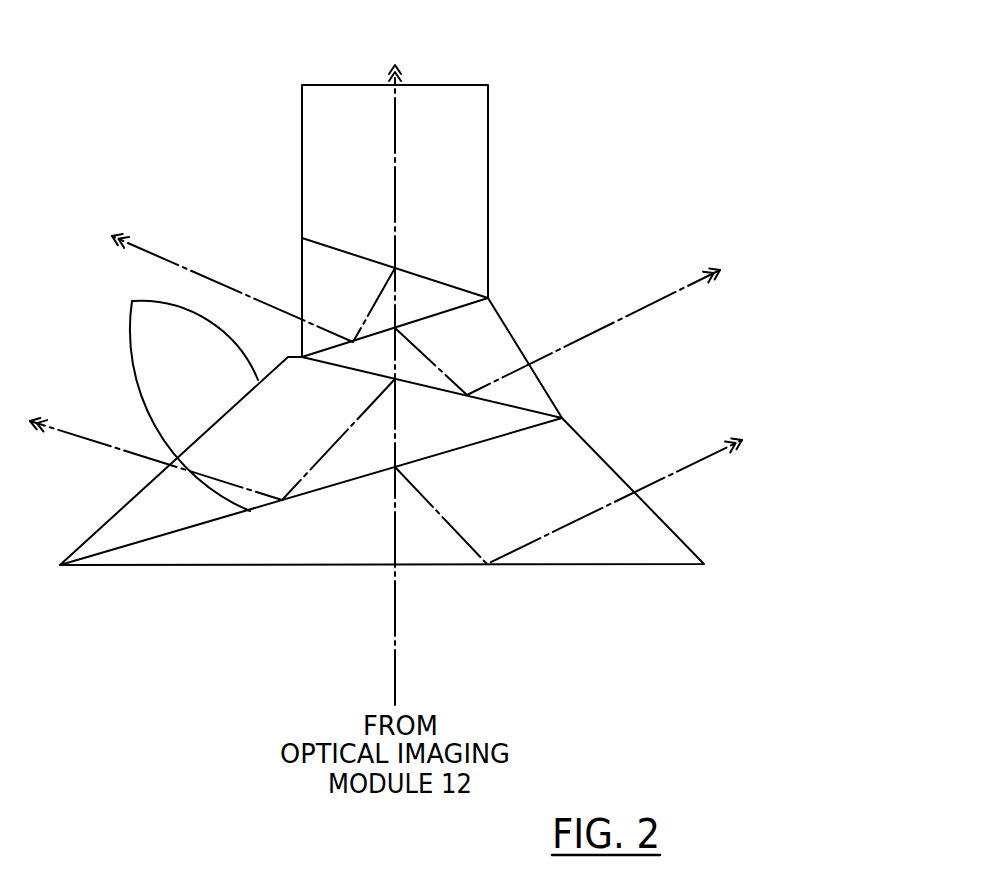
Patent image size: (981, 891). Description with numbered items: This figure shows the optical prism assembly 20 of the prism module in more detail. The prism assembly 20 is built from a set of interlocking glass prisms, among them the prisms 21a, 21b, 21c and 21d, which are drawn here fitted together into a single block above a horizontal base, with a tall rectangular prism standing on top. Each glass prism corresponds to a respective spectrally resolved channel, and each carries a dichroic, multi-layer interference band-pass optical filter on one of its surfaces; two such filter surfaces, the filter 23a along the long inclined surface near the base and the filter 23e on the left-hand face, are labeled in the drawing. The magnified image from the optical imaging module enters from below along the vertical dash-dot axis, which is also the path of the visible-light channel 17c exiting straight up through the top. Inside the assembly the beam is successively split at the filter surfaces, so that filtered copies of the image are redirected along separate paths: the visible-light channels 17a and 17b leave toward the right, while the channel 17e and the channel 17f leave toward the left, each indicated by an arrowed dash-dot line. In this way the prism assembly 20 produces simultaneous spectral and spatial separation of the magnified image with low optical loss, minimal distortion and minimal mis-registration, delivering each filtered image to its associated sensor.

The optical prism assembly 20 is at (382, 317).
The glass prism 21a is at (238, 550).
The glass prism 21b is at (495, 332).
The glass prism 21c is at (481, 209).
The glass prism 21d is at (317, 267).
The dichroic multi-layer interference band-pass optical filter 23a is at (340, 485).
The dichroic multi-layer interference band-pass optical filter 23e is at (227, 411).
The visible-light channel 17a is at (670, 472).
The visible-light channel 17b is at (652, 300).
The visible-light channel 17c is at (398, 153).
The NIR channel 17e is at (163, 253).
The channel 17f is at (67, 430).